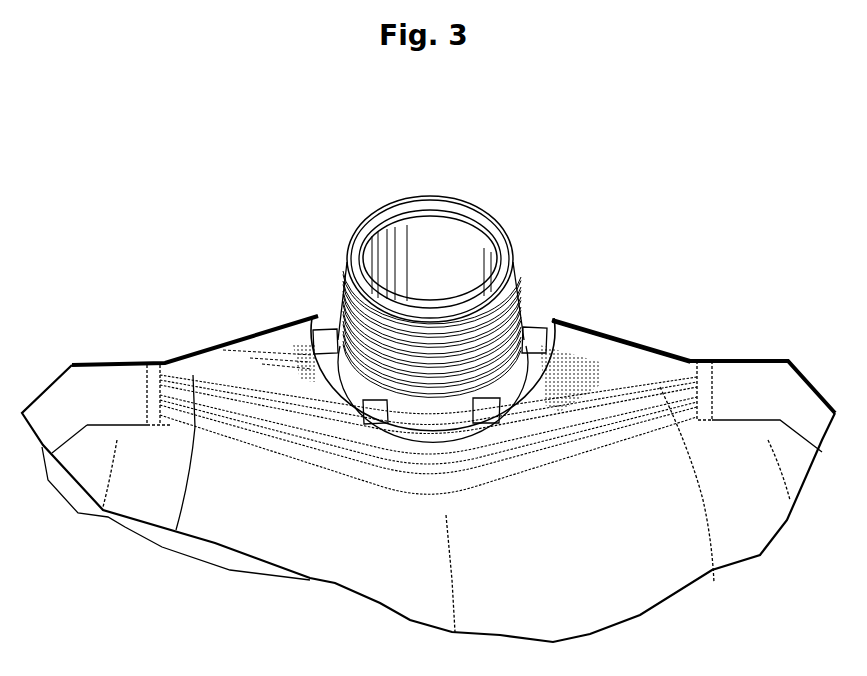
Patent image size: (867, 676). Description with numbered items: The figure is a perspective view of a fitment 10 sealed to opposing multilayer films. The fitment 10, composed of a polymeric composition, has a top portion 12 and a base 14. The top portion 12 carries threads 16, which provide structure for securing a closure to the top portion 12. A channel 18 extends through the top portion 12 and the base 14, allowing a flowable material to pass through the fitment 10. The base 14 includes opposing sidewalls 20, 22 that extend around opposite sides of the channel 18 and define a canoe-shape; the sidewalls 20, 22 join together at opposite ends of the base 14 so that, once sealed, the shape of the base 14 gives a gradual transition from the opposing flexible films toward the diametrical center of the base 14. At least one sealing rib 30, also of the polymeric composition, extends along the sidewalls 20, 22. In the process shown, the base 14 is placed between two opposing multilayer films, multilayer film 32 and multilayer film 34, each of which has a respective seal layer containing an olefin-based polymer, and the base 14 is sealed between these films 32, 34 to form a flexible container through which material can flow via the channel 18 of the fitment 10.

The fitment 10 is at (594, 190).
The top portion 12 is at (538, 278).
The base 14 is at (620, 323).
The threads 16 is at (318, 318).
The channel 18 is at (409, 242).
The sidewall 20 is at (175, 362).
The sidewall 22 is at (268, 350).
The sealing rib 30 is at (223, 398).
The multilayer film 32 is at (228, 345).
The multilayer film 34 is at (260, 390).